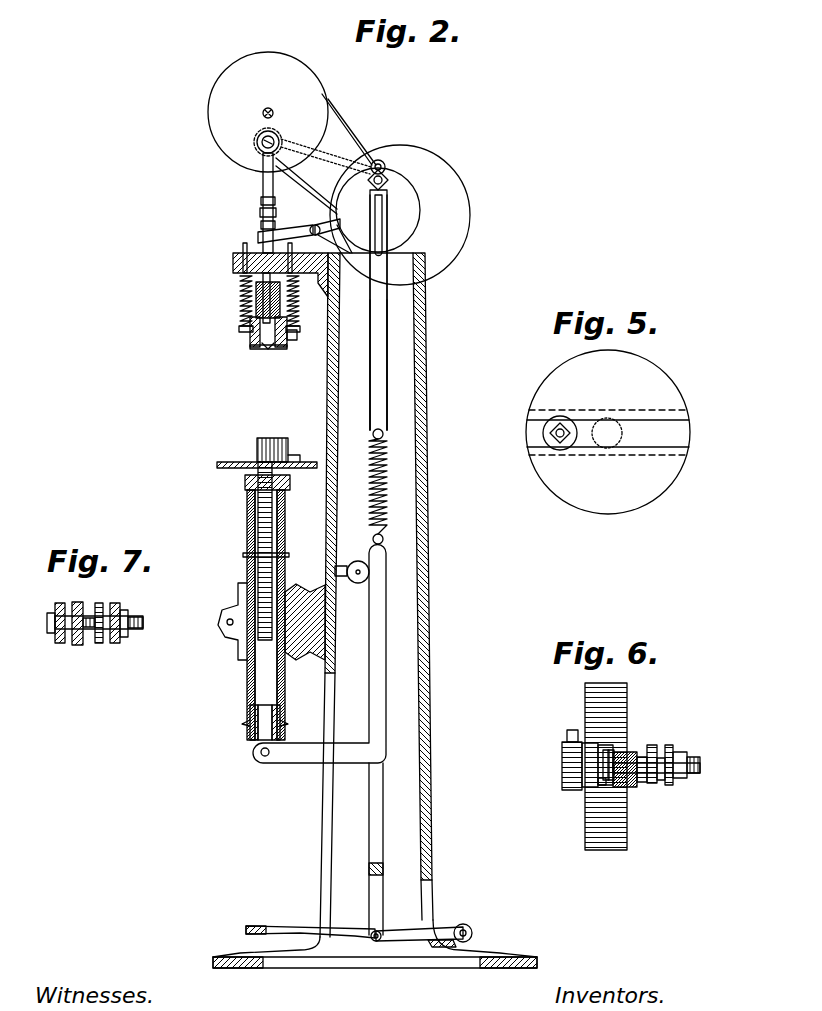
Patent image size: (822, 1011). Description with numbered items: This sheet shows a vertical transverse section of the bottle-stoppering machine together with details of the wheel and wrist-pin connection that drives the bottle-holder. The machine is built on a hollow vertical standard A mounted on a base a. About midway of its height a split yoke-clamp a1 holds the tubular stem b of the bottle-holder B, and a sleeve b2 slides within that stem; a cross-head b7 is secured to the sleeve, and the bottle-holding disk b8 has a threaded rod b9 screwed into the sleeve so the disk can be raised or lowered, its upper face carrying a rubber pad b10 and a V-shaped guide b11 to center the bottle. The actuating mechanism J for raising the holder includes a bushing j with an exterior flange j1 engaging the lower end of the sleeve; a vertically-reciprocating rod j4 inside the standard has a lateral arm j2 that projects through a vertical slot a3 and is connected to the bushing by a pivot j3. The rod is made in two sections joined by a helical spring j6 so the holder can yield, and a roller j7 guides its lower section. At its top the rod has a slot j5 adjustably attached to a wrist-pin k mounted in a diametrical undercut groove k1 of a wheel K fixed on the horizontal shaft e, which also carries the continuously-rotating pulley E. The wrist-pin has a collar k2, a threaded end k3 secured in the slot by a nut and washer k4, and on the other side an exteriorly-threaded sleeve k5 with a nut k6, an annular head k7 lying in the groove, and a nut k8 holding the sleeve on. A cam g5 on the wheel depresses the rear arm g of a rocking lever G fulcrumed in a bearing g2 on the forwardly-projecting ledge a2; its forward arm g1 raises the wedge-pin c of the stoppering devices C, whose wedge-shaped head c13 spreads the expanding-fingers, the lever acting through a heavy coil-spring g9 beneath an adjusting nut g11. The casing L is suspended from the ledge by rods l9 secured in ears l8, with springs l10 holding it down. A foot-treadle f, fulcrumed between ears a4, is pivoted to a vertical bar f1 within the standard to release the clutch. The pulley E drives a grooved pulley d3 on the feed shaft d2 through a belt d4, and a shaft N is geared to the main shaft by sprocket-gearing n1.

In FIG. 2, the grooved pulley d3 is at (268, 112).
In FIG. 2, the horizontal rotary shaft d2 is at (262, 112).
In FIG. 2, the belt d4 is at (340, 112).
In FIG. 2, the horizontal shaft N is at (255, 143).
In FIG. 2, the sprocket-gearing n1 is at (343, 158).
In FIG. 2, the rocking lever G is at (278, 203).
In FIG. 2, the wedge-pin-adjusting nut g11 is at (261, 200).
In FIG. 2, the heavy coil-spring g9 is at (260, 213).
In FIG. 2, the forward arm of rocking lever g1 is at (262, 226).
In FIG. 2, the wedge-pin c is at (258, 238).
In FIG. 2, the rear arm of rocking lever g is at (320, 228).
In FIG. 2, the bearing g2 is at (346, 255).
In FIG. 2, the ledge a2 is at (233, 258).
In FIG. 2, the stoppering devices C is at (245, 300).
In FIG. 2, the vertical rods l9 is at (240, 277).
In FIG. 2, the springs l10 is at (240, 301).
In FIG. 2, the cylindrical casing L is at (250, 338).
In FIG. 2, the wedge-shaped head c13 is at (268, 349).
In FIG. 2, the ears l8 is at (297, 338).
In FIG. 2, the vertical standard A is at (433, 616).
In FIG. 2, the vertical slot a3 is at (320, 800).
In FIG. 2, the pulley E is at (450, 194).
In FIG. 2, the wheel K is at (398, 193).
In FIG. 5, the wheel K is at (608, 432).
In FIG. 6, the wheel K is at (619, 766).
In FIG. 2, the wrist-pin k is at (388, 180).
In FIG. 5, the wrist-pin k is at (550, 448).
In FIG. 6, the wrist-pin k is at (656, 744).
In FIG. 7, the wrist-pin k is at (106, 611).
In FIG. 2, the actuating mechanism J is at (386, 310).
In FIG. 2, the horizontal shaft e is at (383, 210).
In FIG. 2, the longitudinally-extending slot j5 is at (388, 230).
In FIG. 2, the vertically-reciprocating rod j4 is at (387, 352).
In FIG. 2, the helical spring j6 is at (388, 493).
In FIG. 2, the roller j7 is at (356, 585).
In FIG. 2, the lateral arm j2 is at (340, 743).
In FIG. 2, the pivot j3 is at (261, 756).
In FIG. 2, the vertical bar f1 is at (386, 815).
In FIG. 2, the V-shaped guide b11 is at (257, 446).
In FIG. 2, the rubber pad b10 is at (292, 462).
In FIG. 2, the bottle-holding disk b8 is at (217, 464).
In FIG. 2, the cross-head b7 is at (245, 483).
In FIG. 2, the bottle-holder B is at (251, 615).
In FIG. 2, the sleeve b2 is at (247, 532).
In FIG. 2, the tubular stem b is at (247, 568).
In FIG. 2, the threaded rod b9 is at (272, 512).
In FIG. 2, the exterior flange j1 is at (250, 732).
In FIG. 2, the bushing j is at (282, 722).
In FIG. 2, the split yoke-clamp a1 is at (238, 630).
In FIG. 2, the foot-treadle f is at (298, 927).
In FIG. 2, the ears a4 is at (450, 940).
In FIG. 2, the base a is at (496, 956).
In FIG. 5, the undercut groove k1 is at (678, 432).
In FIG. 6, the undercut groove k1 is at (605, 786).
In FIG. 6, the cam g5 is at (562, 760).
In FIG. 6, the nut k8 is at (598, 768).
In FIG. 7, the nut k8 is at (47, 623).
In FIG. 6, the annular head k7 is at (608, 790).
In FIG. 7, the annular head k7 is at (64, 640).
In FIG. 6, the nut k6 is at (632, 790).
In FIG. 7, the nut k6 is at (78, 605).
In FIG. 6, the collar k2 is at (645, 783).
In FIG. 7, the collar k2 is at (99, 645).
In FIG. 6, the exteriorly-threaded sleeve k5 is at (640, 775).
In FIG. 7, the exteriorly-threaded sleeve k5 is at (88, 632).
In FIG. 6, the nut and washer k4 is at (668, 746).
In FIG. 7, the nut and washer k4 is at (116, 606).
In FIG. 6, the threaded end k3 is at (700, 765).
In FIG. 7, the threaded end k3 is at (144, 622).